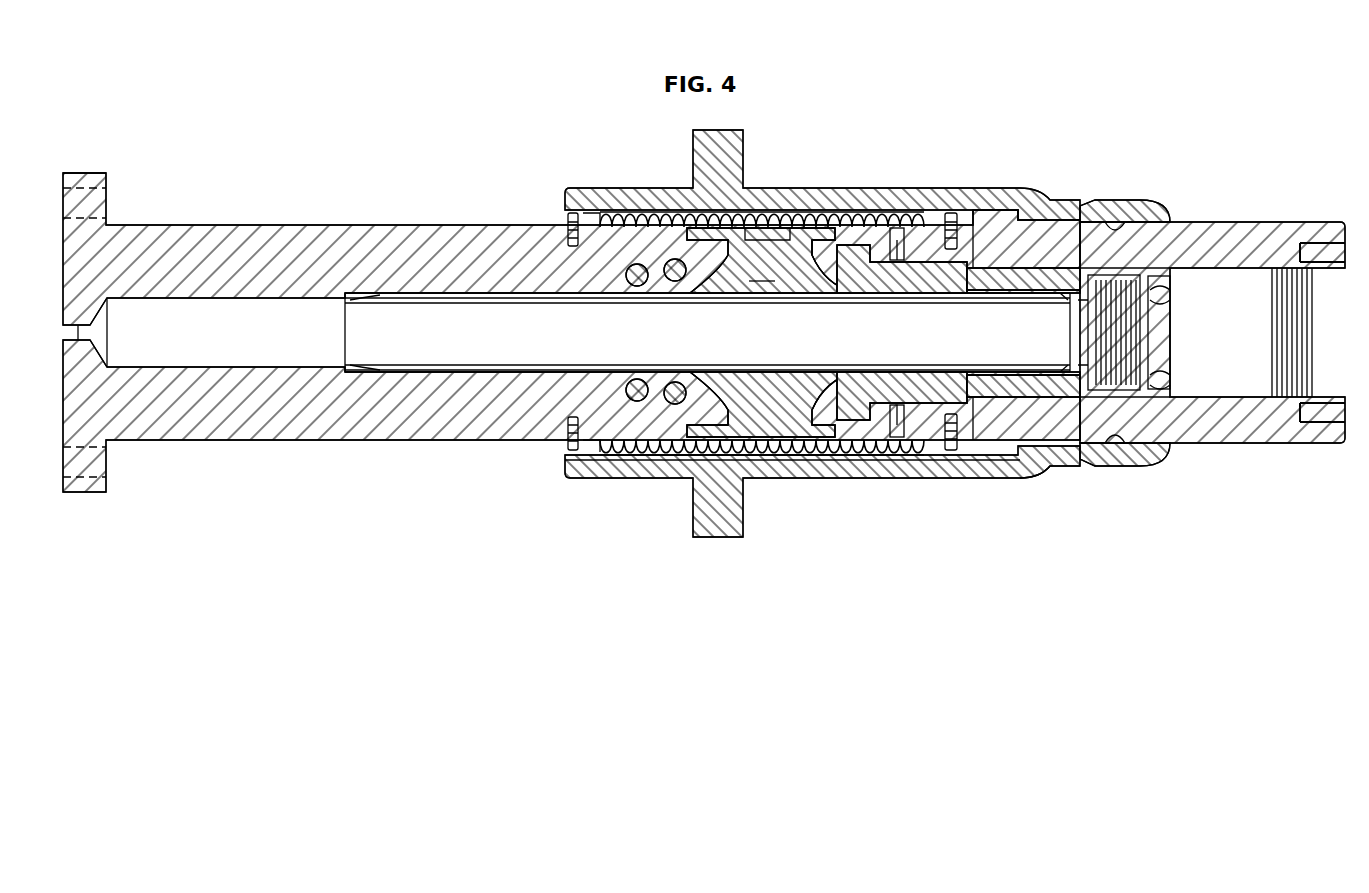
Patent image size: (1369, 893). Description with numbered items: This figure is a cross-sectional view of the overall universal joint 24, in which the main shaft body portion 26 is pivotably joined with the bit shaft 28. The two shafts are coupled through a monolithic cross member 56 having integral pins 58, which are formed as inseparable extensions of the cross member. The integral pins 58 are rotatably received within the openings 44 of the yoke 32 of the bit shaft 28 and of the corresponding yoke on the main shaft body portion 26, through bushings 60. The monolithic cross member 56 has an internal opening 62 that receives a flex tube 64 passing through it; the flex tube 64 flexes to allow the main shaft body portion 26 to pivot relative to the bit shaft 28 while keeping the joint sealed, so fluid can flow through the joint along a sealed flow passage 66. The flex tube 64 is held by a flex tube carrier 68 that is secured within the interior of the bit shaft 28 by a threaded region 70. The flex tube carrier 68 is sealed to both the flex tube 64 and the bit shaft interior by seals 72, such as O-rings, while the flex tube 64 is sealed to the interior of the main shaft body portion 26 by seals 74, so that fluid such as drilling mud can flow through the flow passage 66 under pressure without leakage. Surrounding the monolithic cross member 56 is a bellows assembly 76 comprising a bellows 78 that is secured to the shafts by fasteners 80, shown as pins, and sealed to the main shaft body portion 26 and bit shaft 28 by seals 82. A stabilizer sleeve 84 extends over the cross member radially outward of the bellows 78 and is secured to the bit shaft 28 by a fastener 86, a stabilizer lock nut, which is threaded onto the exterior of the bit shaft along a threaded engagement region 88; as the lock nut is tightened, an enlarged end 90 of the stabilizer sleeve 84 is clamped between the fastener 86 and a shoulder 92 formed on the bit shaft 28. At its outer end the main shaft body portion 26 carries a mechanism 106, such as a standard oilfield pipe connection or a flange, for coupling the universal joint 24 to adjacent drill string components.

The universal joint 24 is at (855, 175).
The main shaft body portion 26 is at (428, 225).
The bit shaft 28 is at (1245, 222).
The yoke 32 is at (690, 238).
The openings 44 is at (762, 455).
The monolithic cross member 56 is at (771, 332).
The integral pins 58 is at (762, 233).
The bushings 60 is at (810, 250).
The internal opening 62 is at (805, 295).
The flex tube 64 is at (522, 293).
The flow passage 66 is at (214, 344).
The flex tube carrier 68 is at (1128, 395).
The threaded region 70 is at (1010, 397).
The seals 72 is at (1048, 298).
The seals 74 is at (370, 365).
The bellows assembly 76 is at (855, 452).
The bellows 78 is at (876, 455).
The fasteners 80 is at (951, 213).
The seals 82 is at (930, 212).
The stabilizer sleeve 84 is at (925, 478).
The fastener 86 is at (1148, 204).
The threaded engagement region 88 is at (1103, 200).
The enlarged end 90 is at (1040, 468).
The shoulder 92 is at (1032, 212).
The mechanism 106 is at (100, 173).